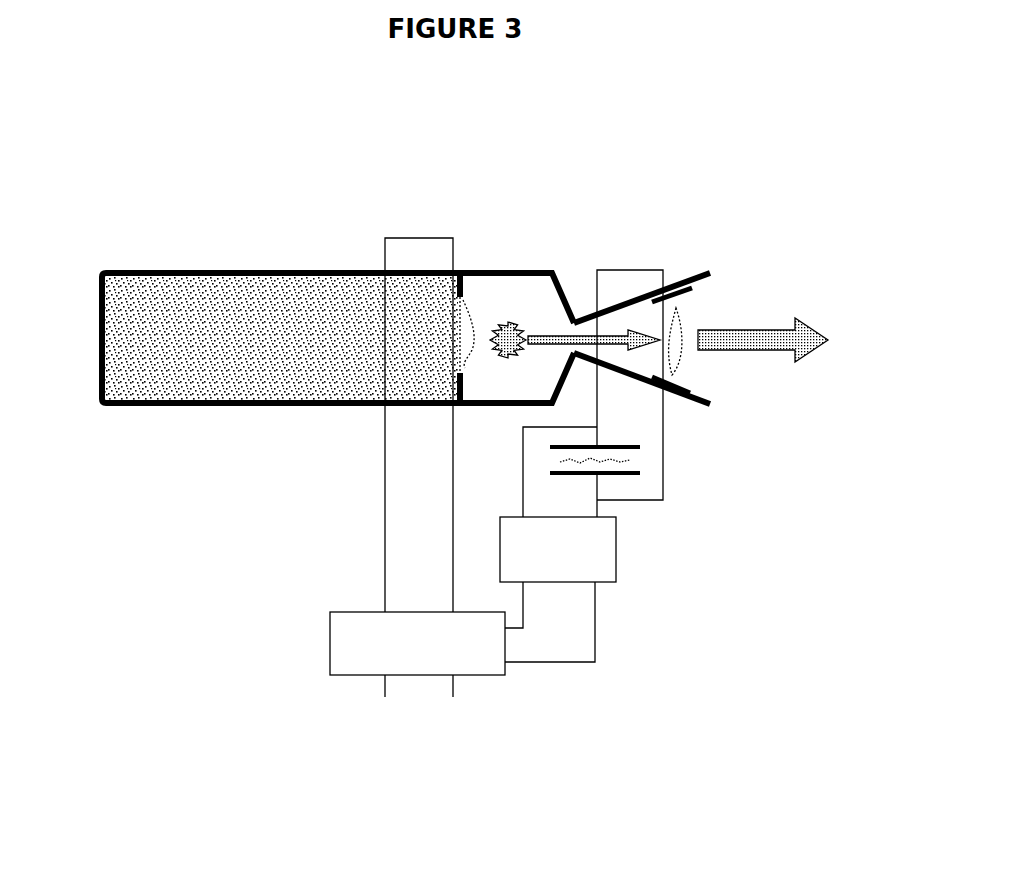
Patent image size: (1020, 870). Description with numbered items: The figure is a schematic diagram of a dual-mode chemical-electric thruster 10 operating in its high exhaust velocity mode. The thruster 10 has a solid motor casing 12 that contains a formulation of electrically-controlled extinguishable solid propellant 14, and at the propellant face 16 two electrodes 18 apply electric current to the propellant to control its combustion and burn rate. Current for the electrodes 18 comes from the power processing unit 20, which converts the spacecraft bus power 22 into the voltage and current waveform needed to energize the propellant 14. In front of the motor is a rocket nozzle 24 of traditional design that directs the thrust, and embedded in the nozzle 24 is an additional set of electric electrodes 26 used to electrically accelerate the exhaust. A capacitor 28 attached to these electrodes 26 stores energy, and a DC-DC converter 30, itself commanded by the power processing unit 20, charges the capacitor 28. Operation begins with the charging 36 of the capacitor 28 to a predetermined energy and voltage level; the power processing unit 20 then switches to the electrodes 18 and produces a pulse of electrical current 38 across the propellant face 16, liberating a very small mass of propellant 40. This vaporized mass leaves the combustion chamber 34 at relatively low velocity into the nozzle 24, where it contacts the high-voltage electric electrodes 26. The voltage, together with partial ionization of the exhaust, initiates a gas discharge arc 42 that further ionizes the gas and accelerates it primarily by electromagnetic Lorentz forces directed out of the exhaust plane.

The thruster 10 is at (100, 210).
The solid motor casing 12 is at (102, 406).
The electrically-controlled extinguishable solid propellant 14 is at (290, 355).
The propellant face 16 is at (492, 274).
The electrodes 18 is at (468, 284).
The power processing unit 20 is at (330, 638).
The spacecraft bus power 22 is at (360, 714).
The rocket nozzle 24 is at (710, 273).
The electric electrodes 26 is at (710, 275).
The capacitor 28 is at (642, 474).
The DC-DC converter 30 is at (618, 550).
The combustion chamber 34 is at (515, 398).
The charging 36 is at (580, 462).
The pulse of electrical current 38 is at (465, 355).
The liberated propellant mass 40 is at (524, 333).
The gas discharge arc 42 is at (688, 363).